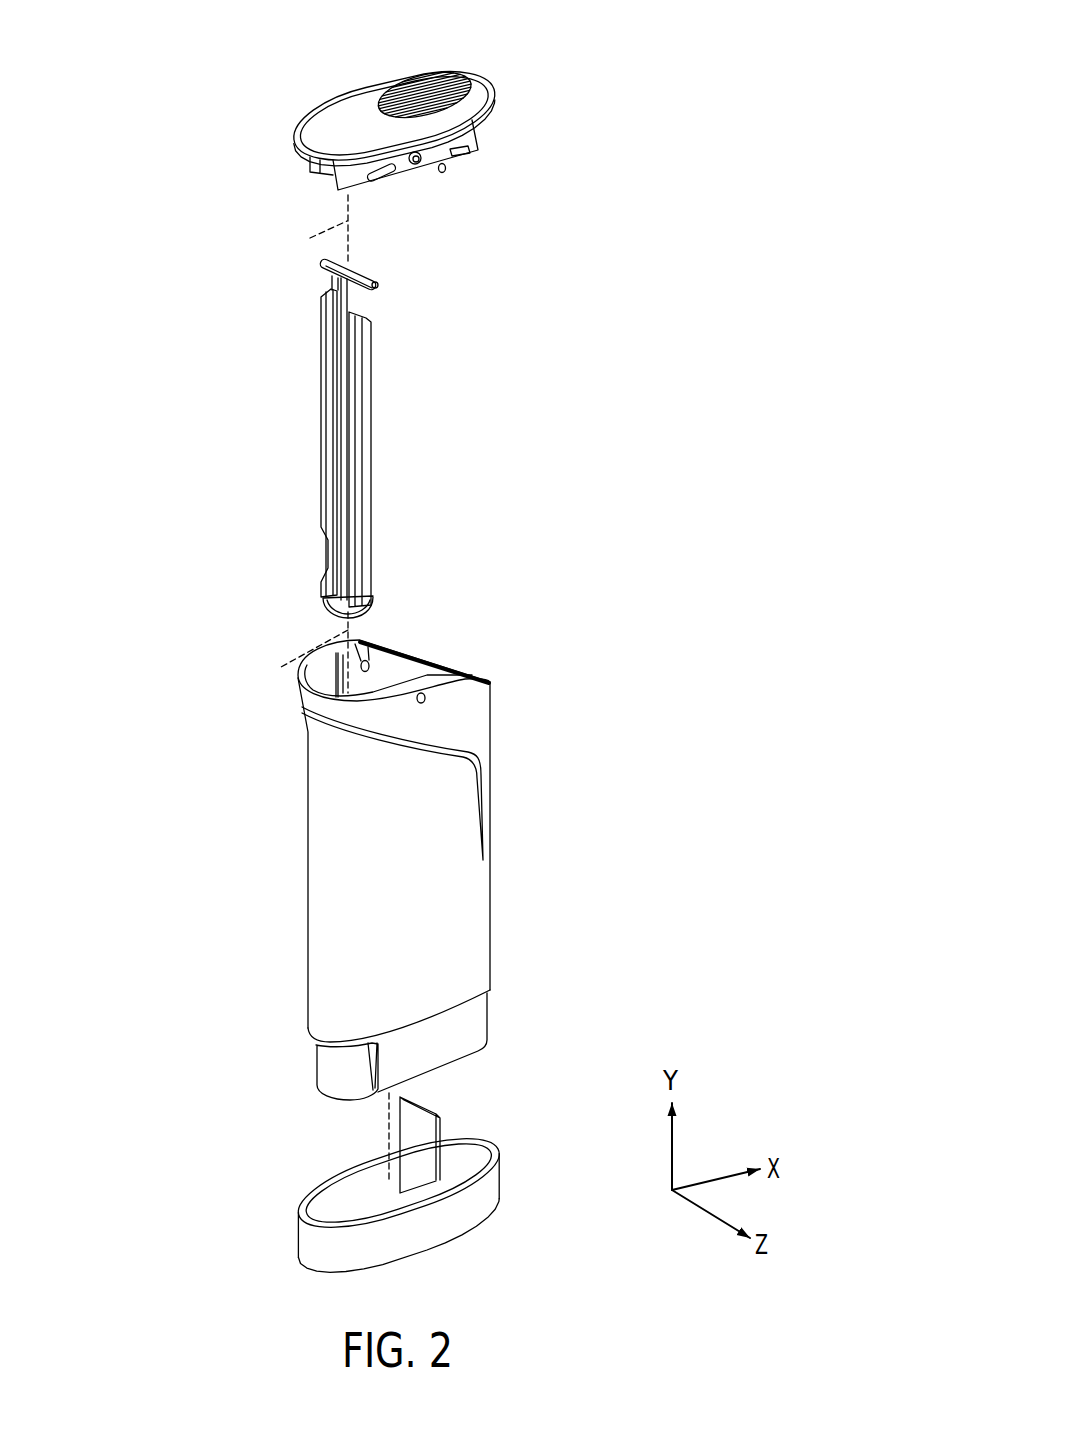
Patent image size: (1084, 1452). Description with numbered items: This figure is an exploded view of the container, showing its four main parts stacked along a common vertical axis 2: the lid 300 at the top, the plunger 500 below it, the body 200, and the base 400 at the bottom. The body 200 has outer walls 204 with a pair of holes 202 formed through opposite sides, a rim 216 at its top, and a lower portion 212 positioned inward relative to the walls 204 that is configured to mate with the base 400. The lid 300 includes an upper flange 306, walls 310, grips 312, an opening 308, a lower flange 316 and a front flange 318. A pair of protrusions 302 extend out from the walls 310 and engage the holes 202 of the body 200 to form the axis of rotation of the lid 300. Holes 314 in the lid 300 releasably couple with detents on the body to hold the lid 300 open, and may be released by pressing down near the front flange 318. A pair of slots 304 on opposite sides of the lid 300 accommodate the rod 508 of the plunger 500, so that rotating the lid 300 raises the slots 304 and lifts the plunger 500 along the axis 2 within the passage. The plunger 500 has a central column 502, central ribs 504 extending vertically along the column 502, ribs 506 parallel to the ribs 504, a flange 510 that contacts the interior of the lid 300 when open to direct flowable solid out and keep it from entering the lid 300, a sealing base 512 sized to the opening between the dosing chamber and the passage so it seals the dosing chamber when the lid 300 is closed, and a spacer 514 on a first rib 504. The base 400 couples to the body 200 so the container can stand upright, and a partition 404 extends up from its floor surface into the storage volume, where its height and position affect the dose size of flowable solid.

The axis 2 is at (306, 444).
The body 200 is at (418, 833).
The holes 202 is at (421, 694).
The walls 204 is at (478, 713).
The lower portion 212 is at (328, 1068).
The rim 216 is at (472, 680).
The lid 300 is at (410, 134).
The protrusions 302 is at (419, 162).
The slots 304 is at (382, 178).
The upper flange 306 is at (472, 72).
The opening 308 is at (363, 188).
The walls 310 is at (405, 183).
The grips 312 is at (412, 94).
The holes 314 is at (446, 169).
The lower flange 316 is at (472, 152).
The front flange 318 is at (297, 141).
The base 400 is at (440, 1175).
The partition 404 is at (428, 1107).
The plunger 500 is at (365, 451).
The central column 502 is at (357, 298).
The ribs 504 is at (340, 454).
The ribs 506 is at (342, 448).
The rod 508 is at (379, 287).
The flange 510 is at (364, 272).
The sealing base 512 is at (337, 608).
The spacer 514 is at (327, 551).